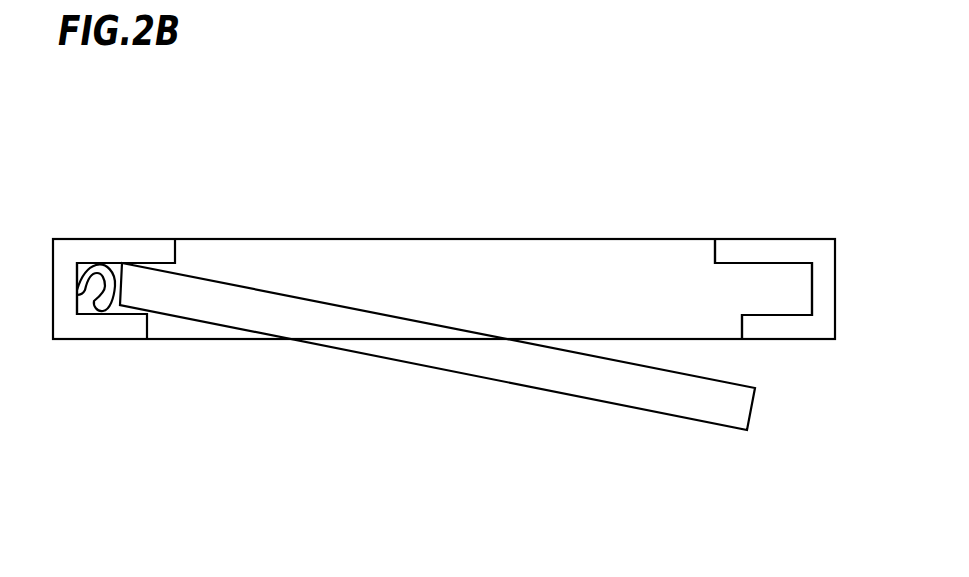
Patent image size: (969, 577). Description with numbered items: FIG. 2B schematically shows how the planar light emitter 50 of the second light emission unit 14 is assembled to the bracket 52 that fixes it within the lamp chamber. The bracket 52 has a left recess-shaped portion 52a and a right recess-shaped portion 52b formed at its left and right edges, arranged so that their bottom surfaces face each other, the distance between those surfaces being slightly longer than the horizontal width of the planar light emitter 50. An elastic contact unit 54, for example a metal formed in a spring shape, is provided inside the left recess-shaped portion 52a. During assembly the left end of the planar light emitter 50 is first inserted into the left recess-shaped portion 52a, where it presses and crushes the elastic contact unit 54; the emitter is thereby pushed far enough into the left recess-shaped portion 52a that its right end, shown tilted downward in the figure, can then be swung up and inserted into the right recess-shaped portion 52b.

The second light emission unit 14 is at (673, 168).
The planar light emitter 50 is at (665, 397).
The bracket 52 is at (632, 265).
The left recess-shaped portion 52a is at (87, 263).
The right recess-shaped portion 52b is at (792, 287).
The elastic contact unit 54 is at (118, 267).